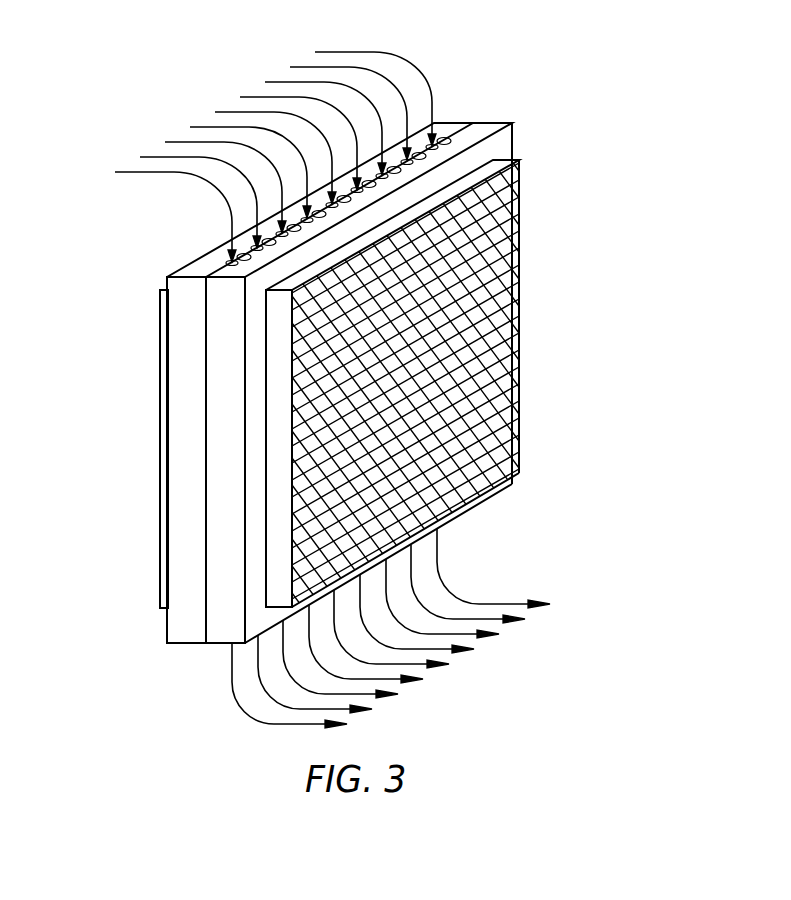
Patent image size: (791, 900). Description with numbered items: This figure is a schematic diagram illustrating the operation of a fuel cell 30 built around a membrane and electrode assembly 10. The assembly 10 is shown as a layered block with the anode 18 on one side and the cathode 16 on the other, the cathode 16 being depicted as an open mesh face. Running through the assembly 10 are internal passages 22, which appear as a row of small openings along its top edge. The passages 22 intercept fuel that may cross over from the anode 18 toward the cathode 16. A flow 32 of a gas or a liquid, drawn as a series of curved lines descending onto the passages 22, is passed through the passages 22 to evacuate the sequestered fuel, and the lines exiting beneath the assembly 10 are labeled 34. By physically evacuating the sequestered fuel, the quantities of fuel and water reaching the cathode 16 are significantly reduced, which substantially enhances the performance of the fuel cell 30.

The membrane and electrode assembly 10 is at (168, 645).
The cathode 16 is at (520, 293).
The anode 18 is at (160, 397).
The internal passages 22 is at (228, 263).
The fuel cell 30 is at (567, 129).
The flow 32 is at (396, 53).
The outgoing field lines 34 is at (250, 714).